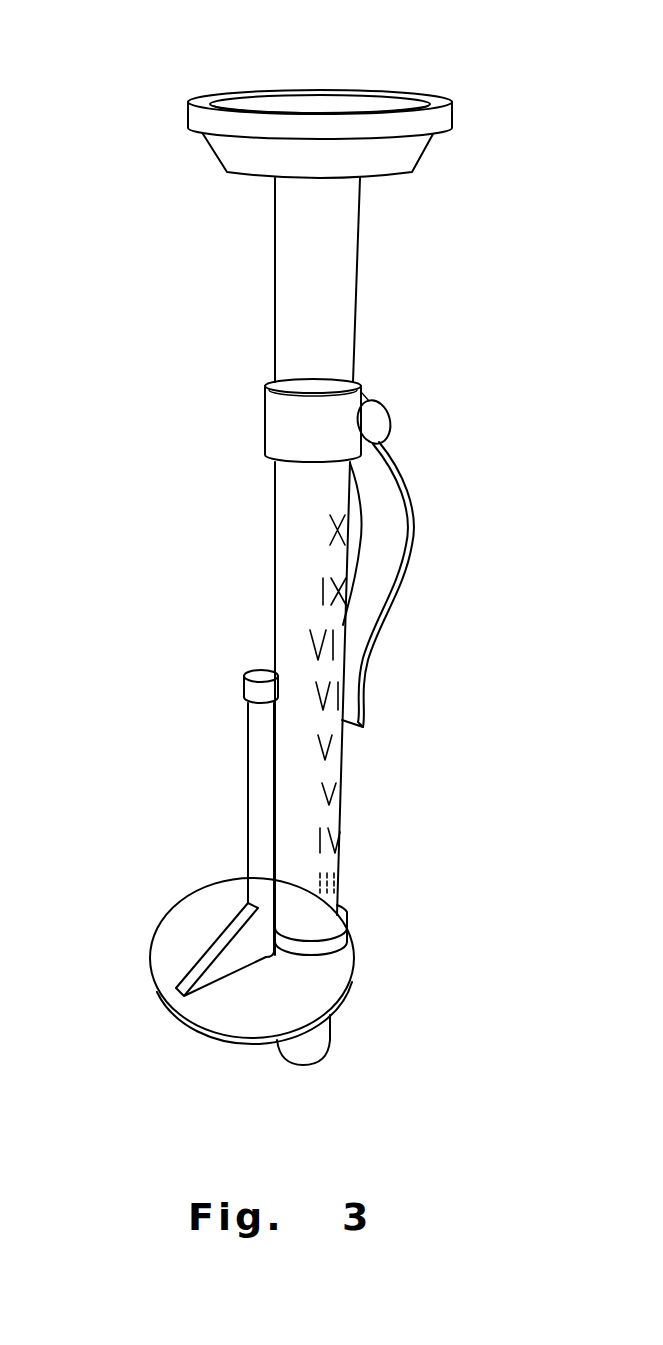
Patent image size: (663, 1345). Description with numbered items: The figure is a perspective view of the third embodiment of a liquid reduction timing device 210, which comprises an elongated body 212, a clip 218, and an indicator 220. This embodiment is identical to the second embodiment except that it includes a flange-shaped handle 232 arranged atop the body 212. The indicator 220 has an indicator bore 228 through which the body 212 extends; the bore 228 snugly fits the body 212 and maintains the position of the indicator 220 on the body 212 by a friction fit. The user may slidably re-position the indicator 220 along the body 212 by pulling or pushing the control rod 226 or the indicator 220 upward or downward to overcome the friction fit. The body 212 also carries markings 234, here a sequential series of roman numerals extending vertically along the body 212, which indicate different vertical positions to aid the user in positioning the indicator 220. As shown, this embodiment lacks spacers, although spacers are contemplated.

The liquid reduction timing device 210 is at (175, 90).
The flange-shaped handle 232 is at (452, 100).
The elongated body 212 is at (360, 263).
The clip 218 is at (413, 538).
The markings 234 is at (328, 538).
The control rod 226 is at (247, 762).
The indicator bore 228 is at (303, 930).
The indicator 220 is at (183, 1022).